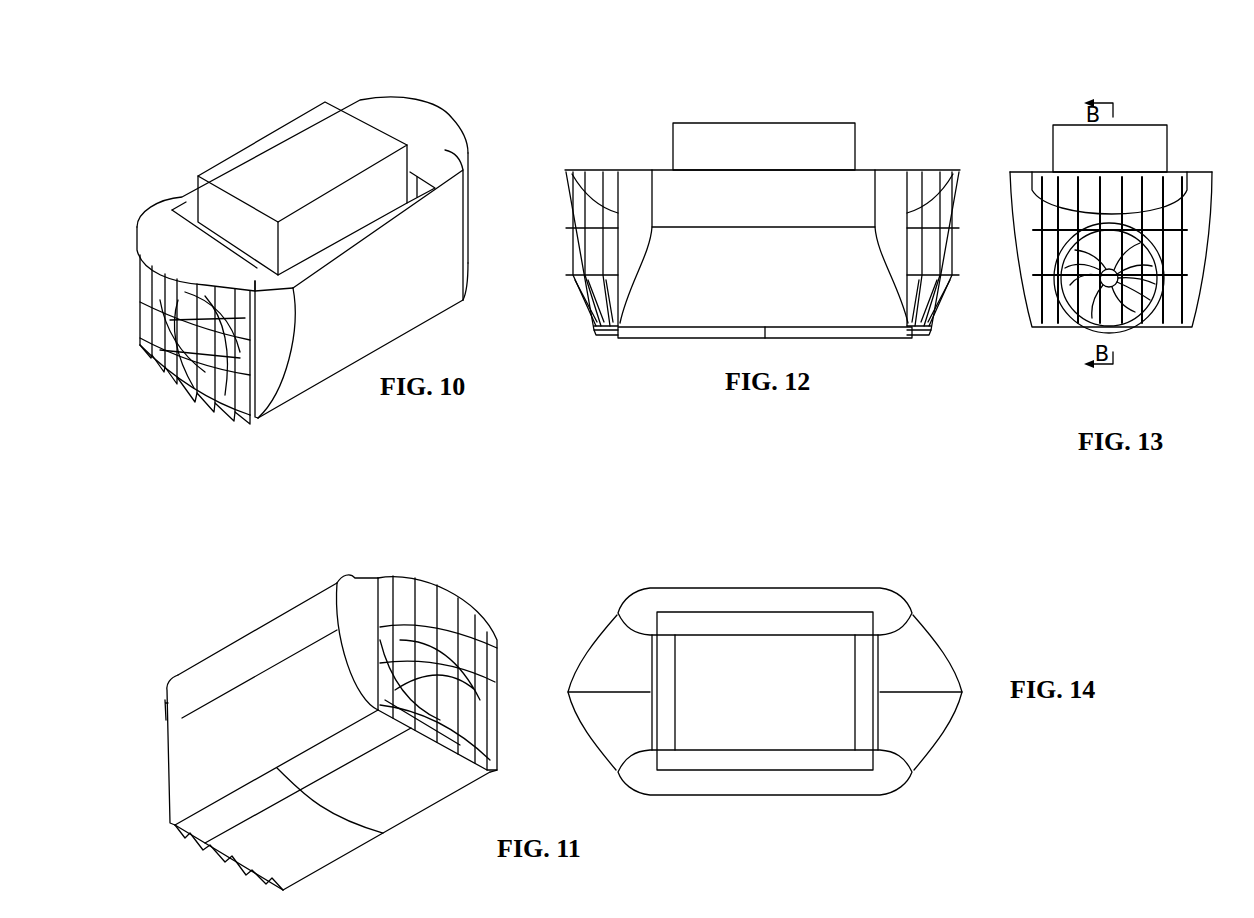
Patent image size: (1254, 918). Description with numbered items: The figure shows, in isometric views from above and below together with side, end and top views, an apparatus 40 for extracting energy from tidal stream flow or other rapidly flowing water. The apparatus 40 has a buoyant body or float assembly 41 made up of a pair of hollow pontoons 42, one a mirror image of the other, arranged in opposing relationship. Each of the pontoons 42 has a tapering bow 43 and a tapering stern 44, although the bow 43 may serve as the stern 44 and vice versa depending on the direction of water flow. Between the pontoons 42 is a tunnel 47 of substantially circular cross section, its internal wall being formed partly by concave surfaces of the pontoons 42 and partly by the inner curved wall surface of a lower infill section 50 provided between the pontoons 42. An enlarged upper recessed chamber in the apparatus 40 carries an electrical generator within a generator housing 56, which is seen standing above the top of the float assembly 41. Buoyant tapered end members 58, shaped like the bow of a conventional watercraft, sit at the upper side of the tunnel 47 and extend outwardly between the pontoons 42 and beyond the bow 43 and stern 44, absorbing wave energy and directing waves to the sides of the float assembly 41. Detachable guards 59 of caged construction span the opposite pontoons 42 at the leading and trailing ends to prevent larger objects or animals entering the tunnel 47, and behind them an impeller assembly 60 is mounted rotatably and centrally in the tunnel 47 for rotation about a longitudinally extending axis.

In FIG. 10, the apparatus 40 is at (462, 125).
In FIG. 12, the apparatus 40 is at (762, 254).
In FIG. 14, the apparatus 40 is at (942, 597).
In FIG. 10, the float assembly 41 is at (318, 398).
In FIG. 11, the float assembly 41 is at (256, 613).
In FIG. 10, the hollow pontoons 42 is at (426, 317).
In FIG. 13, the hollow pontoons 42 is at (1009, 214).
In FIG. 11, the hollow pontoons 42 is at (306, 598).
In FIG. 10, the bow 43 is at (243, 415).
In FIG. 11, the bow 43 is at (385, 578).
In FIG. 10, the stern 44 is at (470, 227).
In FIG. 13, the tunnel 47 is at (1086, 337).
In FIG. 11, the lower infill section 50 is at (372, 797).
In FIG. 10, the generator housing 56 is at (252, 150).
In FIG. 12, the generator housing 56 is at (853, 144).
In FIG. 13, the generator housing 56 is at (1167, 147).
In FIG. 14, the generator housing 56 is at (762, 633).
In FIG. 12, the tapered end members 58 is at (612, 170).
In FIG. 14, the tapered end members 58 is at (598, 630).
In FIG. 10, the detachable guards 59 is at (220, 416).
In FIG. 12, the detachable guards 59 is at (594, 318).
In FIG. 13, the detachable guards 59 is at (1194, 244).
In FIG. 11, the detachable guards 59 is at (478, 597).
In FIG. 13, the impeller assembly 60 is at (1142, 314).